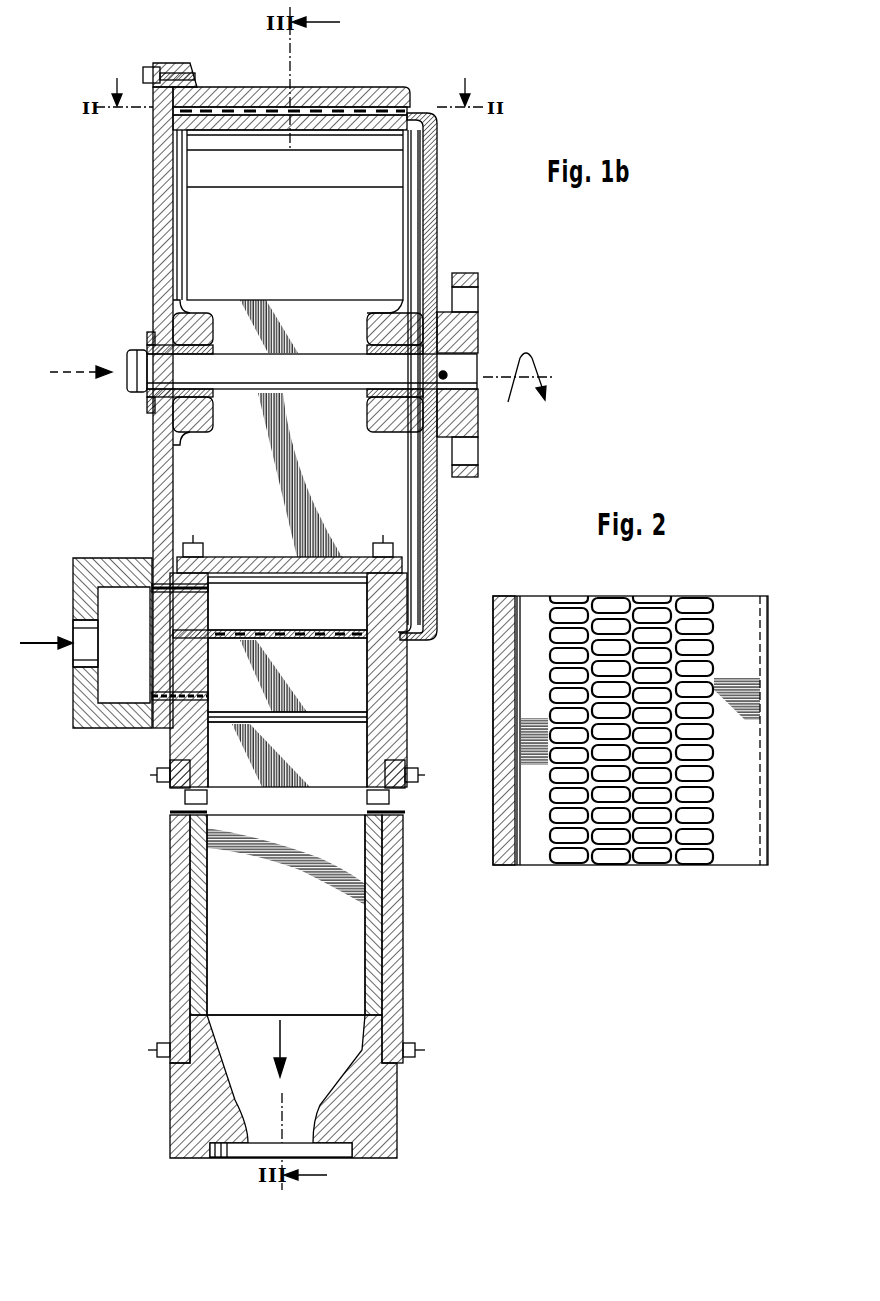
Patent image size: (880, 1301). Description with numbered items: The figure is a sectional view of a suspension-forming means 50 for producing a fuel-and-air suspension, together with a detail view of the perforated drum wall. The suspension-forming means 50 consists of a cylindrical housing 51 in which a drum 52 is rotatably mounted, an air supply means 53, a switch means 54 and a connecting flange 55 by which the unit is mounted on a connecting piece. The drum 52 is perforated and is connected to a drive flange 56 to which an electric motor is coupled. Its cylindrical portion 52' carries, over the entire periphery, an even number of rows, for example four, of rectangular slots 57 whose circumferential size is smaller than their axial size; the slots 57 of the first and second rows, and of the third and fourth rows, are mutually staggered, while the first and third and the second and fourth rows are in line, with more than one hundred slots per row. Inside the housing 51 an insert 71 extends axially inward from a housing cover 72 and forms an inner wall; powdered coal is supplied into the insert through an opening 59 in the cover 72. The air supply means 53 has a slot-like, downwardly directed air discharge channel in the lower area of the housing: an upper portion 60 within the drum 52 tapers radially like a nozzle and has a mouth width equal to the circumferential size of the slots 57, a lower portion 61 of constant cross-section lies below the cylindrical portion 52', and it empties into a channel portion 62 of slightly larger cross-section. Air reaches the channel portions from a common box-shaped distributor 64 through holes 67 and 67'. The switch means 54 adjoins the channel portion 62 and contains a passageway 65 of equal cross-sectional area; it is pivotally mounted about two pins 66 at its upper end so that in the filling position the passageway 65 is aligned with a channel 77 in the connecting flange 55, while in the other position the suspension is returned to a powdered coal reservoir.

In FIG. 1B, the suspension-forming means 50 is at (425, 727).
In FIG. 1B, the cylindrical housing 51 is at (362, 105).
In FIG. 1B, the drum 52 is at (447, 376).
In FIG. 2, the drum 52 is at (750, 754).
In FIG. 1B, the cylindrical portion 52' is at (290, 144).
In FIG. 2, the cylindrical portion 52' is at (716, 753).
In FIG. 1B, the air supply means 53 is at (120, 743).
In FIG. 1B, the switch means 54 is at (373, 918).
In FIG. 1B, the connecting flange 55 is at (190, 1112).
In FIG. 1B, the drive flange 56 is at (478, 322).
In FIG. 1B, the slots 57 is at (262, 114).
In FIG. 2, the slots 57 is at (680, 849).
In FIG. 1B, the opening 59 is at (152, 331).
In FIG. 1B, the upper portion of air discharge channel 60 is at (287, 603).
In FIG. 1B, the lower portion of air discharge channel 61 is at (287, 675).
In FIG. 1B, the channel portion 62 is at (287, 754).
In FIG. 1B, the distributor 64 is at (103, 556).
In FIG. 1B, the passageway 65 is at (286, 915).
In FIG. 1B, the pins 66 is at (178, 805).
In FIG. 1B, the hole 67 is at (160, 600).
In FIG. 1B, the hole 67' is at (158, 686).
In FIG. 1B, the insert 71 is at (300, 118).
In FIG. 1B, the housing cover 72 is at (153, 213).
In FIG. 2, the housing cover 72 is at (493, 650).
In FIG. 1B, the channel 77 is at (286, 1046).